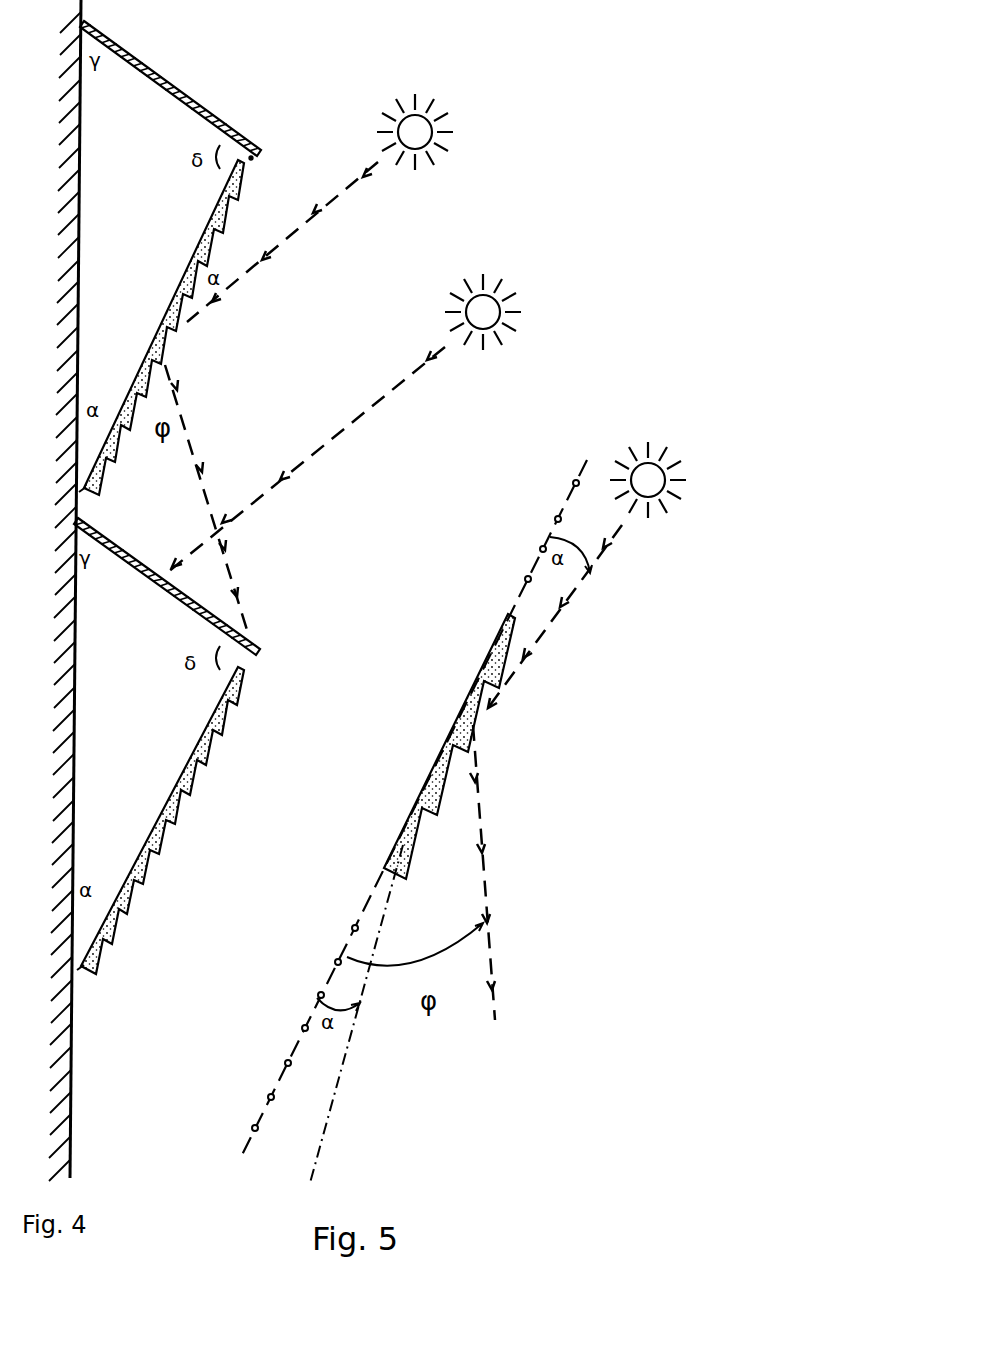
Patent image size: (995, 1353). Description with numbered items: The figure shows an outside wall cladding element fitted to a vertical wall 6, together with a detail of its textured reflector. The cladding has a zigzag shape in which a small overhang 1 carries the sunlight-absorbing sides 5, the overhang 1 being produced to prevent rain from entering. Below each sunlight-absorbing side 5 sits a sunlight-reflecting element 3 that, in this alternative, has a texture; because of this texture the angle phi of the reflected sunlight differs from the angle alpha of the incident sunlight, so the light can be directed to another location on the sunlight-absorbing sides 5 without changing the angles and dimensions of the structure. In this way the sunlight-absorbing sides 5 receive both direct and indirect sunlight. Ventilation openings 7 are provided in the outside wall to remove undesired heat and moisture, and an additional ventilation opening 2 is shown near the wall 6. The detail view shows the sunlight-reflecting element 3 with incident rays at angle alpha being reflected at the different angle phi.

In FIG. 4, the overhang 1 is at (187, 497).
In FIG. 4, the additional ventilation opening 2 is at (93, 507).
In FIG. 5, the additional ventilation opening 2 is at (414, 807).
In FIG. 4, the sunlight-reflecting element 3 is at (184, 265).
In FIG. 5, the sunlight-reflecting element 3 is at (477, 641).
In FIG. 4, the sunlight-absorbing side 5 is at (189, 91).
In FIG. 4, the vertical wall 6 is at (67, 407).
In FIG. 4, the ventilation opening 7 is at (255, 172).